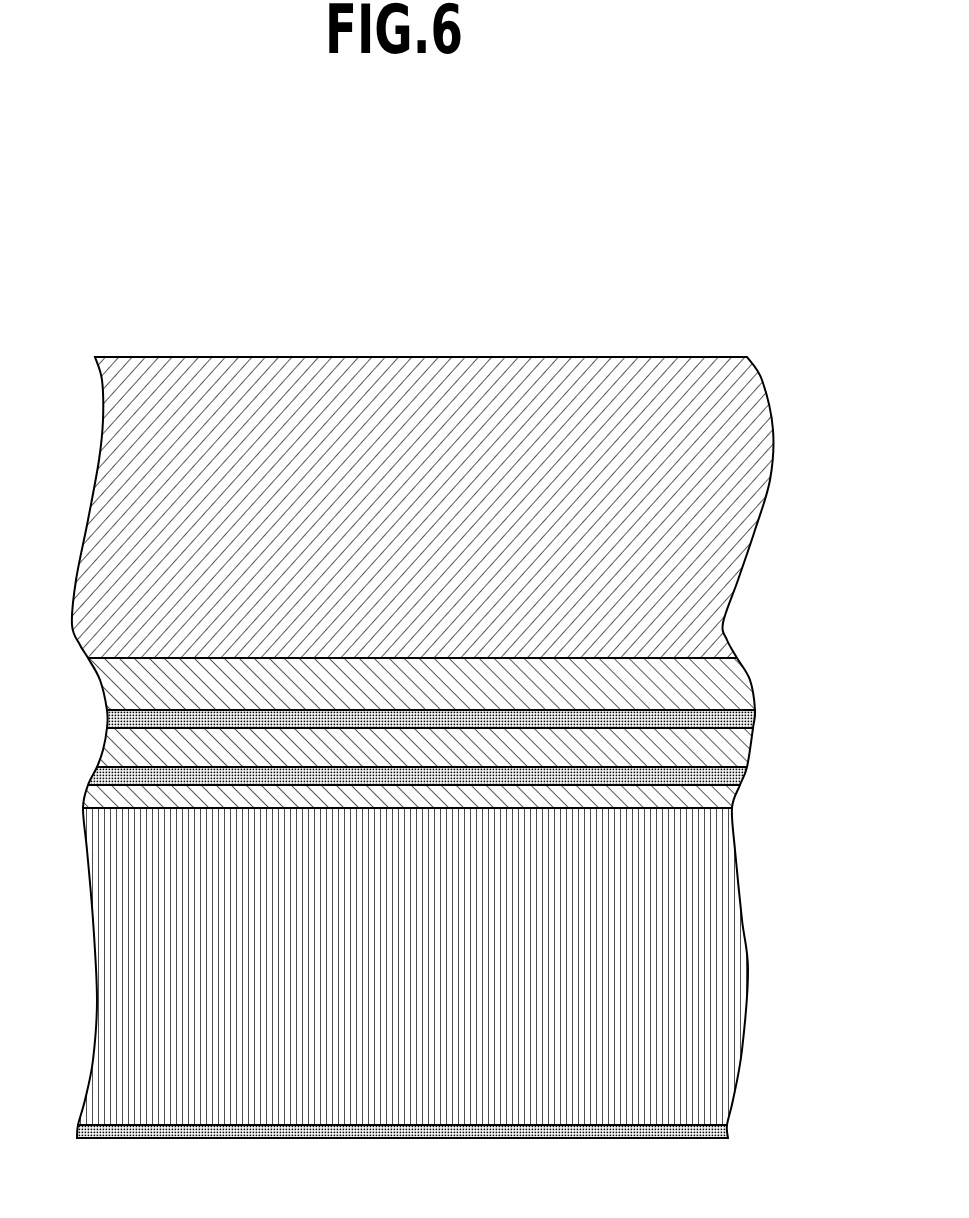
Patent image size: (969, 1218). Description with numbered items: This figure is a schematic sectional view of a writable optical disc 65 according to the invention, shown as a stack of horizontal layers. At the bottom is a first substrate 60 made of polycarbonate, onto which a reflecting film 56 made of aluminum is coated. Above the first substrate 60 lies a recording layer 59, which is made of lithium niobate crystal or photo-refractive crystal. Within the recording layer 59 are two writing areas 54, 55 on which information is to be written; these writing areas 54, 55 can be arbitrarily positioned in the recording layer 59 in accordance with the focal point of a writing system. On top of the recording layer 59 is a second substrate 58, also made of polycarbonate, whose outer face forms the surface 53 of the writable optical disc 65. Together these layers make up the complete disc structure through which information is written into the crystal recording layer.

The surface 53 is at (442, 356).
The writing area 54 is at (733, 712).
The writing area 55 is at (725, 768).
The reflecting film 56 is at (682, 1122).
The second substrate 58 is at (715, 518).
The recording layer 59 is at (715, 672).
The first substrate 60 is at (663, 888).
The writable optical disc 65 is at (806, 392).